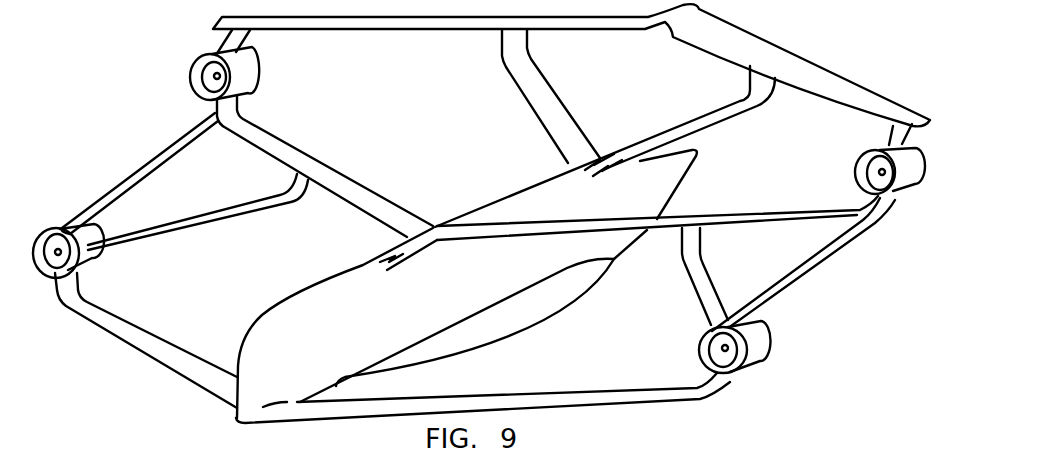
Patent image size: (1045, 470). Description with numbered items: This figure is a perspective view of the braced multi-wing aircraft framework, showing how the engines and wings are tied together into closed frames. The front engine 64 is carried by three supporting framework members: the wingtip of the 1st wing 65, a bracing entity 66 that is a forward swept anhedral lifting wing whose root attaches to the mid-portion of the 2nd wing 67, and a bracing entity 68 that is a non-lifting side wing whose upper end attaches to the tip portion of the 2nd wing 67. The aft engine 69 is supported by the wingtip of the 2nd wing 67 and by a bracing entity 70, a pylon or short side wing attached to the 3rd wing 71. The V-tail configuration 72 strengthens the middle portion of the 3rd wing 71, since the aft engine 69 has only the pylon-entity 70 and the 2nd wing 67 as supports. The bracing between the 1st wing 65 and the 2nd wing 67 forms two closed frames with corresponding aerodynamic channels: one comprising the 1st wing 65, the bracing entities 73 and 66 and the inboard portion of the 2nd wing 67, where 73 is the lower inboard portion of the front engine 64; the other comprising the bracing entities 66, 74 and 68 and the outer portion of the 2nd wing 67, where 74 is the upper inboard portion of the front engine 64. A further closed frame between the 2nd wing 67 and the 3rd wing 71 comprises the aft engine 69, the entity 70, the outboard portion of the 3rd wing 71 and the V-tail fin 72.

The front engine 64 is at (755, 376).
The 1st wing 65 is at (162, 353).
The bracing entity 66 is at (700, 285).
The 2nd wing 67 is at (343, 183).
The bracing entity 68 is at (843, 245).
The aft engine 69 is at (905, 180).
The bracing entity 70 is at (898, 138).
The 3rd wing 71 is at (808, 78).
The V-tail configuration 72 is at (547, 105).
The lower inboard portion of the front engine 73 is at (85, 264).
The upper inboard portion of the front engine 74 is at (86, 232).